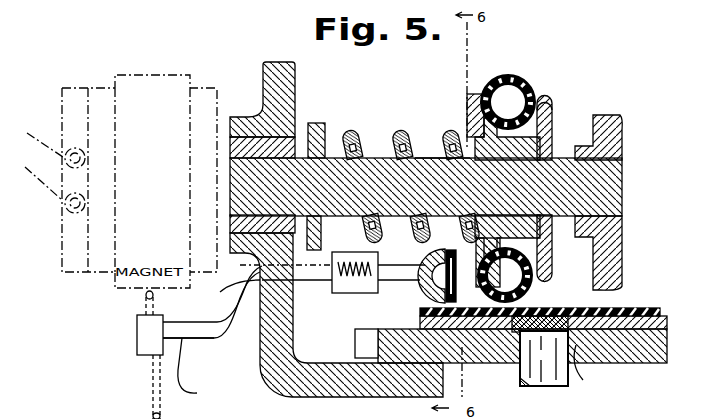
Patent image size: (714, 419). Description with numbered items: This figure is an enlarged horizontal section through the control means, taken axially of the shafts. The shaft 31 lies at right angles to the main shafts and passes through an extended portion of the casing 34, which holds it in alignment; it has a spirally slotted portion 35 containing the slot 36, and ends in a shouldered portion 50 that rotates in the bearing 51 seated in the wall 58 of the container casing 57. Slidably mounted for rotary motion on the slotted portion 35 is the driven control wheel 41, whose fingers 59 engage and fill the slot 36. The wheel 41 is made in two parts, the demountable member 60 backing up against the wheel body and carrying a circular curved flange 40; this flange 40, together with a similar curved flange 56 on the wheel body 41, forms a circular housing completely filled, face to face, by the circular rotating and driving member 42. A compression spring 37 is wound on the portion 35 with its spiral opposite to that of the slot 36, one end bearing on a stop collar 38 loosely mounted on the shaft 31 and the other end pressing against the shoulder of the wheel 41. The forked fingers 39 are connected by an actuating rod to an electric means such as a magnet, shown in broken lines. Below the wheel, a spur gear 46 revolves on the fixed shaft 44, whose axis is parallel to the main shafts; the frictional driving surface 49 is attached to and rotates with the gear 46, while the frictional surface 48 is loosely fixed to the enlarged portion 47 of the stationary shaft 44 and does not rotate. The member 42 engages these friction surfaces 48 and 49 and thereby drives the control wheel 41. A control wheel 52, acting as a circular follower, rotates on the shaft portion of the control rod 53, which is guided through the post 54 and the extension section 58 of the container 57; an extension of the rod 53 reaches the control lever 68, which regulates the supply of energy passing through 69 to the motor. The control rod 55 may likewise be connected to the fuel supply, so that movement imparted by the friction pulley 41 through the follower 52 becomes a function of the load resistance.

The shaft 31 is at (608, 189).
The extended portion of the casing 34 is at (622, 131).
The spirally slotted portion 35 is at (432, 165).
The slot 36 is at (384, 157).
The compression spring 37 is at (362, 130).
The stop collar 38 is at (217, 340).
The forked fingers 39 is at (318, 173).
The circular curved flange 40 is at (478, 135).
The driven control wheel 41 is at (552, 134).
The circular rotating and driving member 42 is at (519, 74).
The fixed shaft 44 is at (522, 372).
The spur gear 46 is at (363, 338).
The enlarged portion of the stationary shaft 47 is at (589, 369).
The frictional surface 48 is at (547, 316).
The frictional driving surface 49 is at (638, 316).
The shouldered portion 50 is at (426, 187).
The bearing 51 is at (230, 225).
The control wheel 52 is at (420, 283).
The control rod 53 is at (313, 275).
The post 54 is at (353, 288).
The control rod 55 is at (240, 295).
The curved flange 56 is at (550, 98).
The container casing 57 is at (270, 347).
The wall of the container 58 is at (230, 125).
The fingers 59 is at (481, 163).
The demountable member 60 is at (448, 140).
The control lever 68 is at (191, 373).
The energy supply passage 69 is at (142, 343).